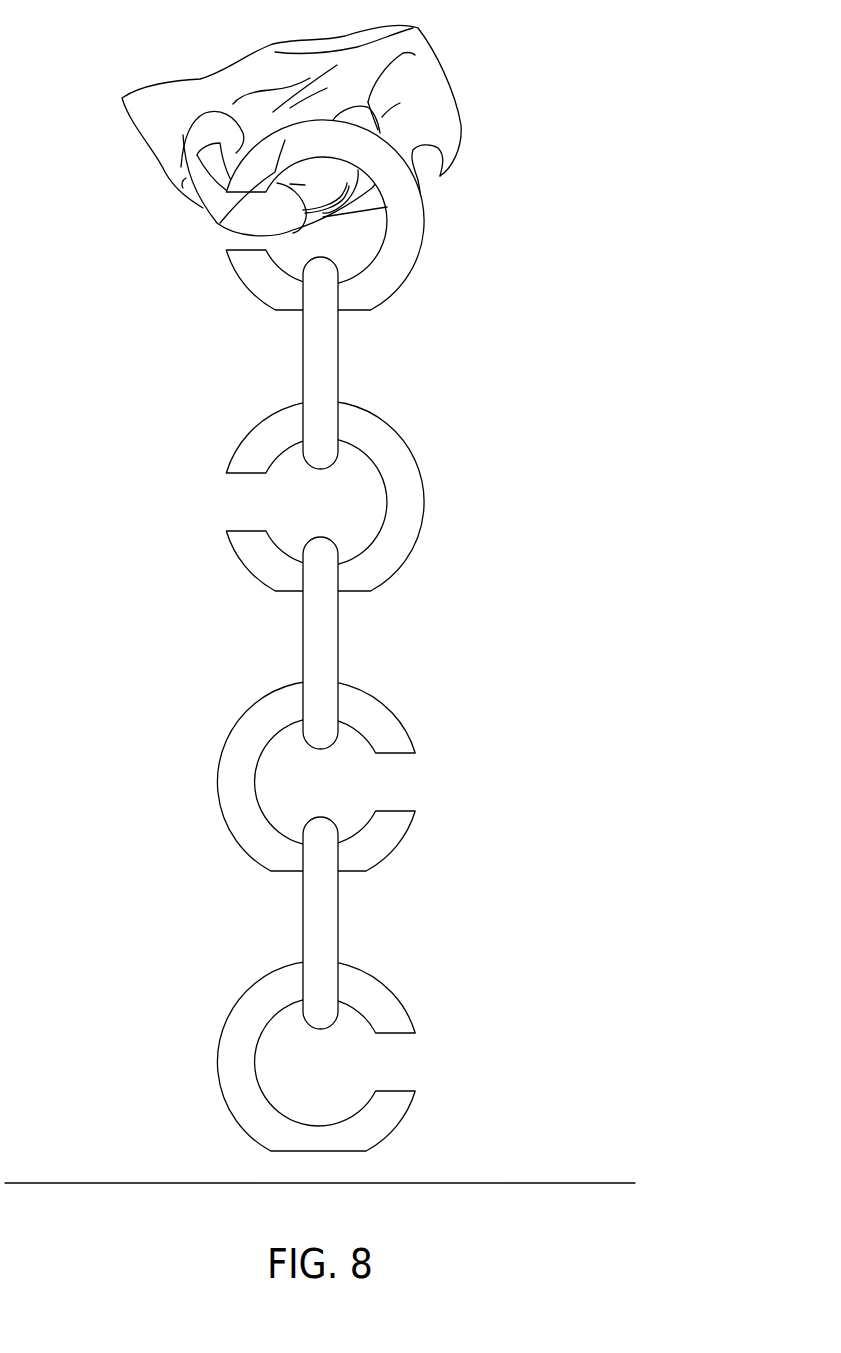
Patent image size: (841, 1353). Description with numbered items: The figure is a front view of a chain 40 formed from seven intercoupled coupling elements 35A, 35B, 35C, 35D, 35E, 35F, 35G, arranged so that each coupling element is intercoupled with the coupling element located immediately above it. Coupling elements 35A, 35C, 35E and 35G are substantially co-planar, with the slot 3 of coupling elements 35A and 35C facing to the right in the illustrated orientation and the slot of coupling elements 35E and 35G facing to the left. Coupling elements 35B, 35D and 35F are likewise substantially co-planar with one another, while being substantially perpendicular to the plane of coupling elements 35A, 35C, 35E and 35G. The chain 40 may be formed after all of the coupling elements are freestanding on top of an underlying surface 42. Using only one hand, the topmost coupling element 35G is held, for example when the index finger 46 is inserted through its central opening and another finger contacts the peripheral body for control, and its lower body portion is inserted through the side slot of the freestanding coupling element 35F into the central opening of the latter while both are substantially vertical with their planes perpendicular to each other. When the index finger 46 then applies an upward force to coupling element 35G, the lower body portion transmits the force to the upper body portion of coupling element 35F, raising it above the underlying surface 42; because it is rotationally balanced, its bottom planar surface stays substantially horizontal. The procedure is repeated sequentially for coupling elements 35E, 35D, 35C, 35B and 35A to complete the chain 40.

The slot 3 is at (403, 1063).
The coupling element 35A is at (383, 1002).
The coupling element 35B is at (318, 924).
The coupling element 35C is at (383, 722).
The coupling element 35D is at (318, 644).
The coupling element 35E is at (402, 473).
The coupling element 35F is at (318, 363).
The coupling element 35G is at (247, 183).
The chain 40 is at (128, 437).
The underlying surface 42 is at (72, 1182).
The index finger 46 is at (300, 185).